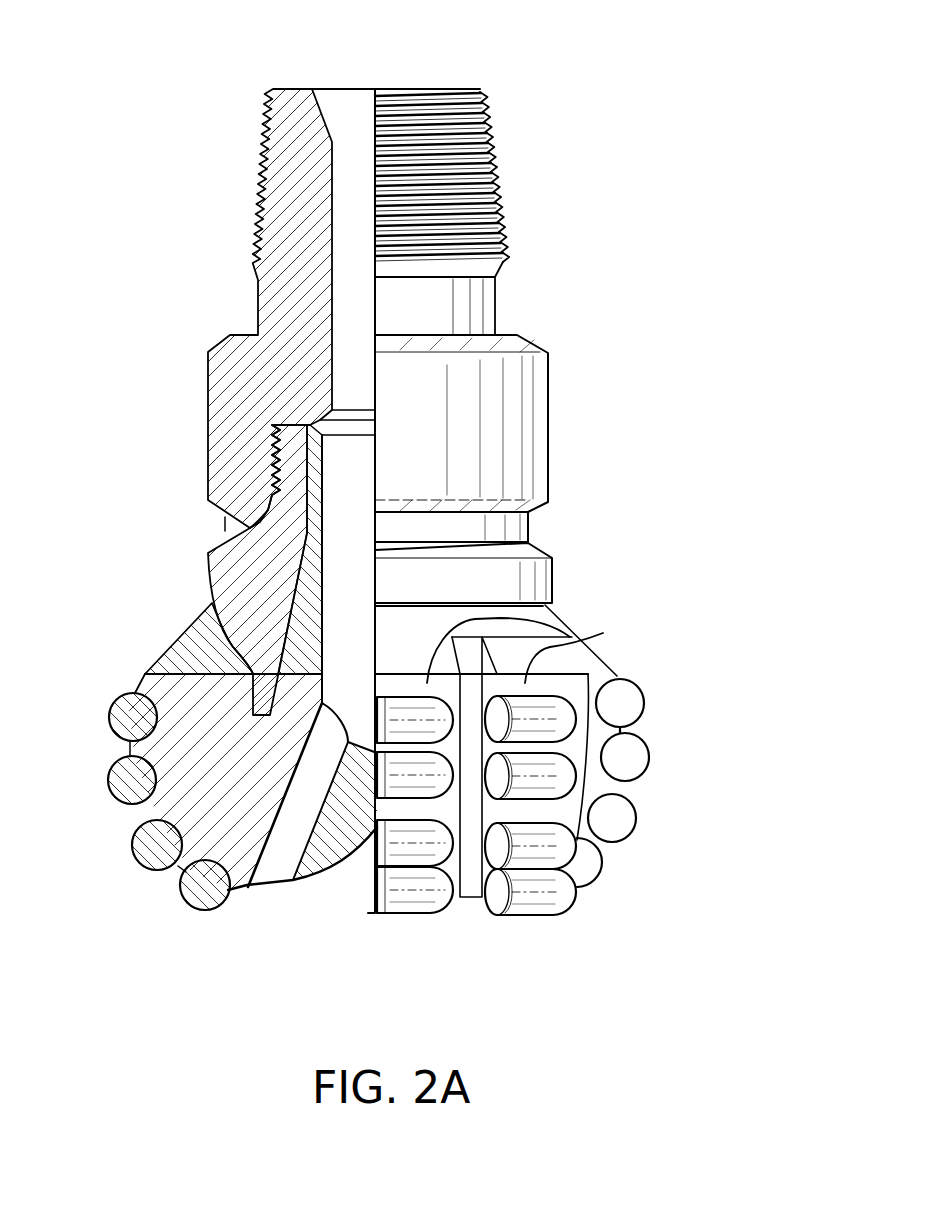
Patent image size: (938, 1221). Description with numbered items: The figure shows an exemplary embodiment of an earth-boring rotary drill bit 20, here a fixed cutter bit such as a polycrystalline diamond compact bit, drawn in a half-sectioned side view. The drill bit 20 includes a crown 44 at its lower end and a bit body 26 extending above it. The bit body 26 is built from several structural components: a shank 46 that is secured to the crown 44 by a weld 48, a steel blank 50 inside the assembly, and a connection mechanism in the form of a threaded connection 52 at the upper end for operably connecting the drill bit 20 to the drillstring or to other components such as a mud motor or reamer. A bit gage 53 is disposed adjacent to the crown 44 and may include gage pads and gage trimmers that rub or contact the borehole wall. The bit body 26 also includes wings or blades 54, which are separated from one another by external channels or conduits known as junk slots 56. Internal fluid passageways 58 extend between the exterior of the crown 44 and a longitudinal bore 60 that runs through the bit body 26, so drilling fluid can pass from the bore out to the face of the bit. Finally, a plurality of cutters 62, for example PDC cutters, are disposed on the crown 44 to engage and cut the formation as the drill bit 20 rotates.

The earth-boring rotary drill bit 20 is at (98, 86).
The bit body 26 is at (742, 100).
The crown 44 is at (163, 805).
The shank 46 is at (543, 428).
The weld 48 is at (528, 524).
The steel blank 50 is at (215, 575).
The threaded connection 52 is at (232, 163).
The bit gage 53 is at (178, 652).
The blades 54 is at (567, 637).
The junk slots 56 is at (472, 888).
The internal fluid passageways 58 is at (280, 868).
The longitudinal bore 60 is at (352, 345).
The cutters 62 is at (145, 858).